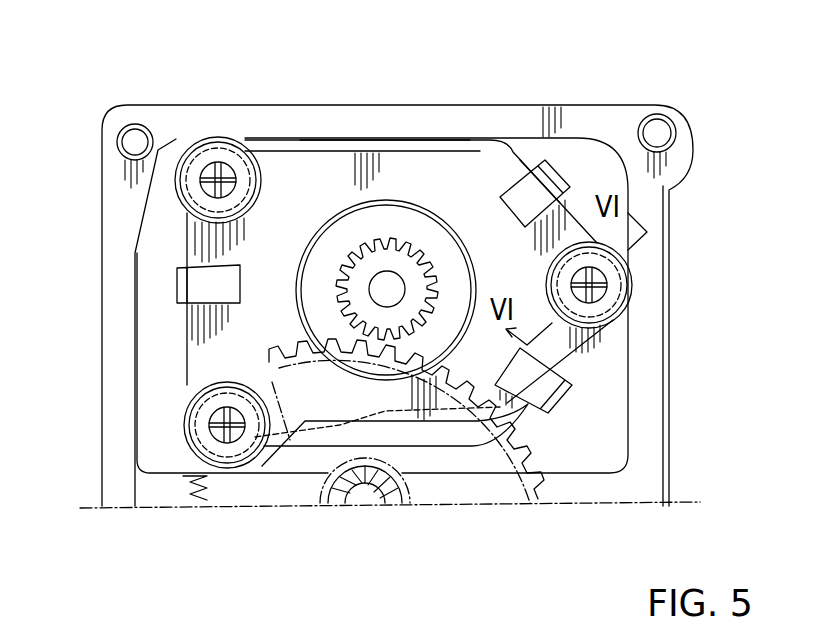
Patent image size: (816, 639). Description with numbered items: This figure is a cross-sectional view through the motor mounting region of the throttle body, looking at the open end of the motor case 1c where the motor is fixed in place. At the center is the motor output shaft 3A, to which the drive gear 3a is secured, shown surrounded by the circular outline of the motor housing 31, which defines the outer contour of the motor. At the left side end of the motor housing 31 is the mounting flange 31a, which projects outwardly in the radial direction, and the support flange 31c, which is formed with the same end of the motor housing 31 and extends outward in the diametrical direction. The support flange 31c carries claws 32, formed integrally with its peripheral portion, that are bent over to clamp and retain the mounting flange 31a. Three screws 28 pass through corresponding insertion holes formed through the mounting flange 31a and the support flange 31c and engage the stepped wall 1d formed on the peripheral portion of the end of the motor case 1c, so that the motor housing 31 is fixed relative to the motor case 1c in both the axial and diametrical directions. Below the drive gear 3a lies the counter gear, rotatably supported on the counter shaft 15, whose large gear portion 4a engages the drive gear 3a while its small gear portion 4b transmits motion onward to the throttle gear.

The motor case 1c is at (347, 110).
The stepped wall 1d is at (597, 168).
The output shaft 3A is at (376, 242).
The drive gear 3a is at (395, 268).
The motor housing 31 is at (405, 205).
The support flange 31c is at (460, 143).
The mounting flange 31a is at (510, 160).
The claws 32 is at (562, 188).
The screws 28 is at (212, 138).
The counter shaft 15 is at (367, 503).
The small gear portion 4b is at (402, 470).
The large gear portion 4a is at (528, 500).